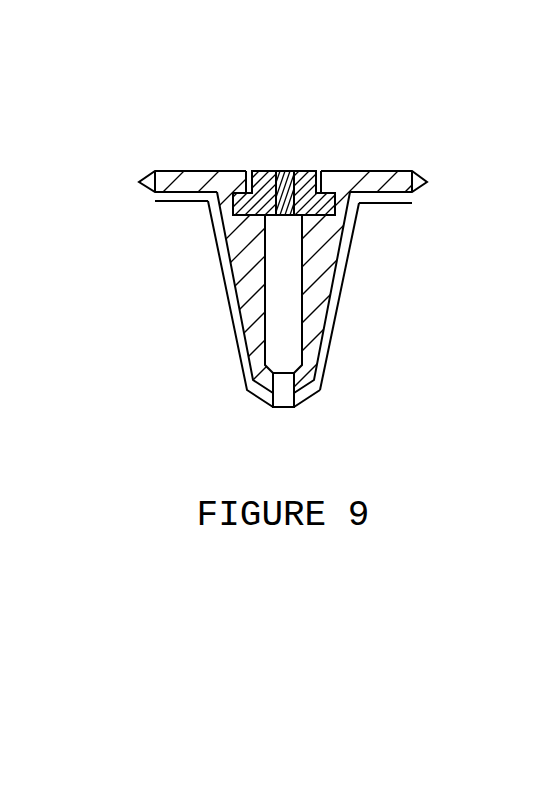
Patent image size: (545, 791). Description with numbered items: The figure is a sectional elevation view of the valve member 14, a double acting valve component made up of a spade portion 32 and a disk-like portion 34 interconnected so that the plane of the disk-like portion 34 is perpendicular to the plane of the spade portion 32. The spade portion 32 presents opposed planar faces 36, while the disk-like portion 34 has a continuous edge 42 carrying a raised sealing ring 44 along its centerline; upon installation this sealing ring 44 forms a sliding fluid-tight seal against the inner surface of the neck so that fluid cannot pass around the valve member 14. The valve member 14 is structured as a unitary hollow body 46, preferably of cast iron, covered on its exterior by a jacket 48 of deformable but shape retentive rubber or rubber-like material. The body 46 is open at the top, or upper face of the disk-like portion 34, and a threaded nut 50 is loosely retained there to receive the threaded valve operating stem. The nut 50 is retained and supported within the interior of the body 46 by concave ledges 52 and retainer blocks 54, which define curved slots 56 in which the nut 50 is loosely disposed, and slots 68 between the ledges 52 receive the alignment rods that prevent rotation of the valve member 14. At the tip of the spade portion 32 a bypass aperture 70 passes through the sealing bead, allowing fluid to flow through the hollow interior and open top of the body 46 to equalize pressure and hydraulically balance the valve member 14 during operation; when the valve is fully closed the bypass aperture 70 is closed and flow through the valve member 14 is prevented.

The valve member 14 is at (368, 298).
The spade portion 32 is at (236, 343).
The disk-like portion 34 is at (132, 253).
The opposed planar faces 36 is at (225, 302).
The continuous edge 42 is at (423, 175).
The raised sealing ring 44 is at (412, 203).
The unitary hollow body 46 is at (330, 252).
The jacket 48 is at (155, 201).
The threaded nut 50 is at (314, 156).
The concave ledges 52 is at (230, 242).
The retainer blocks 54 is at (200, 251).
The curved slots 56 is at (389, 289).
The slots 68 is at (280, 279).
The bypass aperture 70 is at (232, 408).